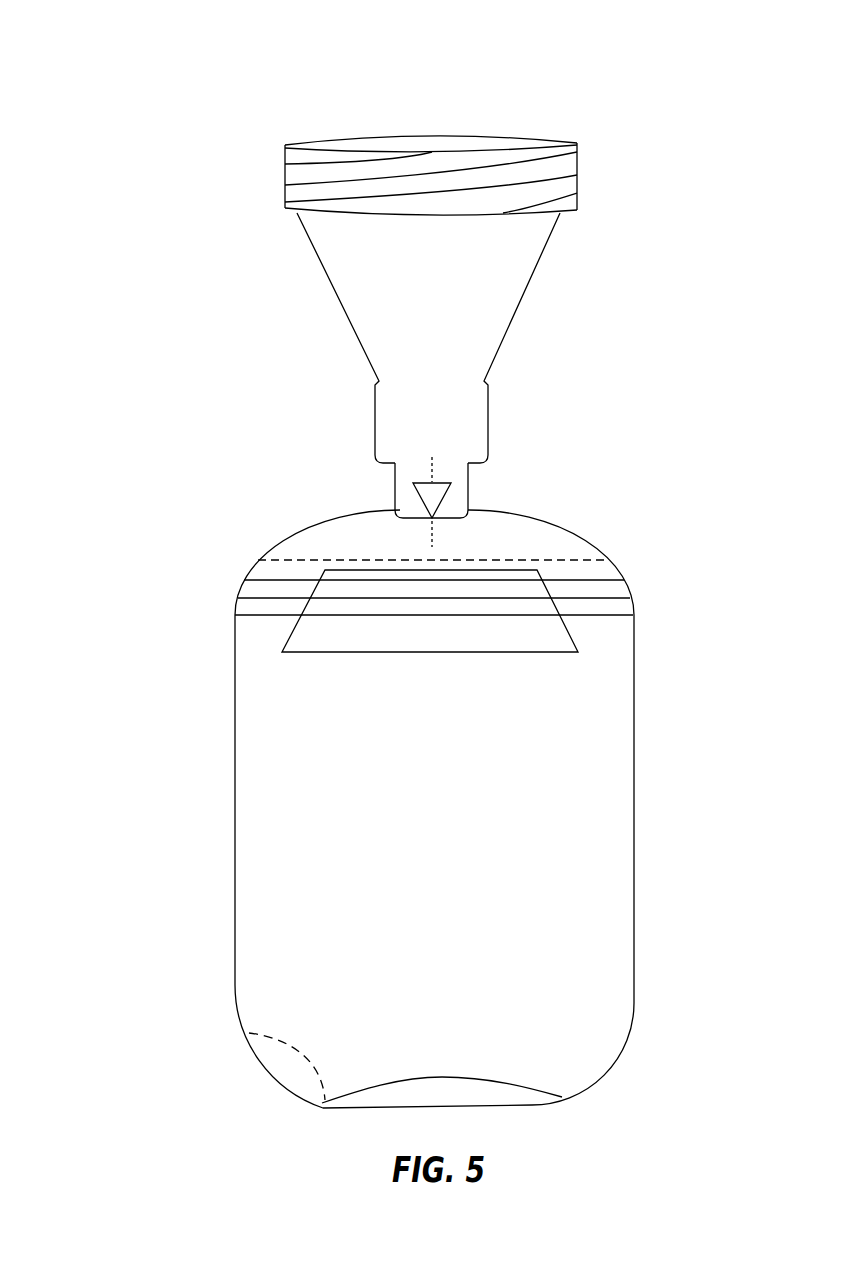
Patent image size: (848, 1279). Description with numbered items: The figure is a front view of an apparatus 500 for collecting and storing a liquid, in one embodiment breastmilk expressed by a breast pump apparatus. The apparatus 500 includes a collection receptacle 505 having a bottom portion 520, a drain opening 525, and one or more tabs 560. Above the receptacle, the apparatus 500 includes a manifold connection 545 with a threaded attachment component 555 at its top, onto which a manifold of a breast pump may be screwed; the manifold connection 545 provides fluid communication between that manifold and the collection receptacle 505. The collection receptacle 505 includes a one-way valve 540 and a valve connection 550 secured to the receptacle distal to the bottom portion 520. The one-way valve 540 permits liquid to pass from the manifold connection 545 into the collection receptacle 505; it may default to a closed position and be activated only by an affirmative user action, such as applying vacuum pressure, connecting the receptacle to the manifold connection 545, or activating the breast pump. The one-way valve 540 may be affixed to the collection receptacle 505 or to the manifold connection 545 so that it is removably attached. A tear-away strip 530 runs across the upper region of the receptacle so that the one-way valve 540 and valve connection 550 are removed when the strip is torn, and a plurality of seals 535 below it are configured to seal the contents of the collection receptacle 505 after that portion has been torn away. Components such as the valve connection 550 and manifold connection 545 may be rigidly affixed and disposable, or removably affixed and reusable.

The apparatus 500 is at (150, 70).
The collection receptacle 505 is at (607, 890).
The bottom portion 520 is at (492, 1083).
The drain opening 525 is at (283, 1040).
The tear-away strip 530 is at (270, 580).
The seals 535 is at (252, 572).
The one-way valve 540 is at (443, 499).
The manifold connection 545 is at (463, 421).
The valve connection 550 is at (395, 479).
The threaded attachment component 555 is at (328, 183).
The tabs 560 is at (575, 634).